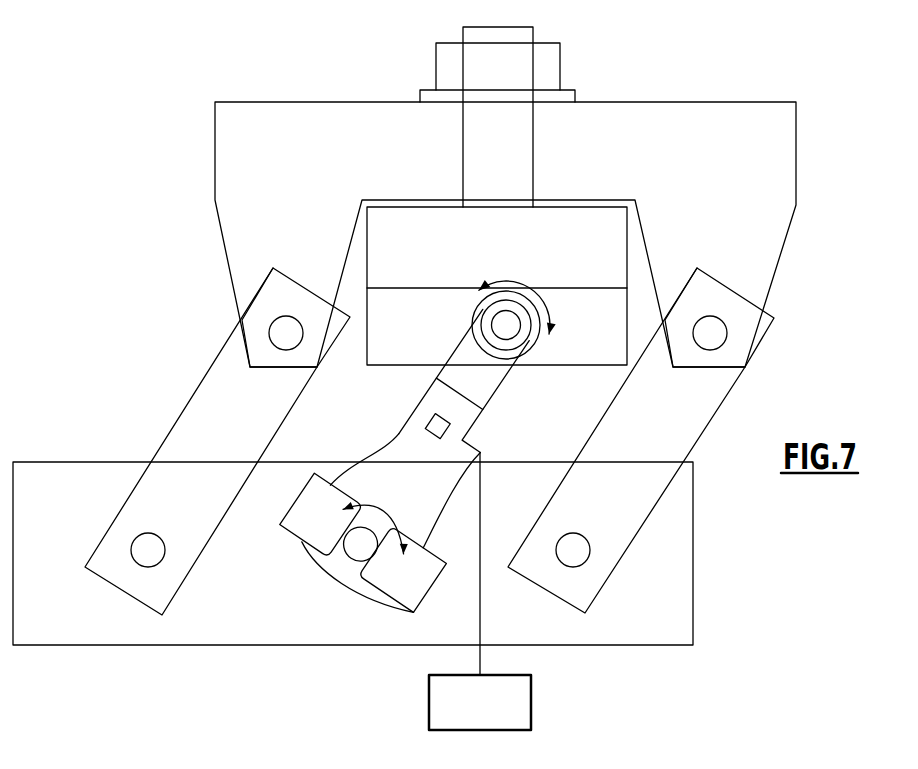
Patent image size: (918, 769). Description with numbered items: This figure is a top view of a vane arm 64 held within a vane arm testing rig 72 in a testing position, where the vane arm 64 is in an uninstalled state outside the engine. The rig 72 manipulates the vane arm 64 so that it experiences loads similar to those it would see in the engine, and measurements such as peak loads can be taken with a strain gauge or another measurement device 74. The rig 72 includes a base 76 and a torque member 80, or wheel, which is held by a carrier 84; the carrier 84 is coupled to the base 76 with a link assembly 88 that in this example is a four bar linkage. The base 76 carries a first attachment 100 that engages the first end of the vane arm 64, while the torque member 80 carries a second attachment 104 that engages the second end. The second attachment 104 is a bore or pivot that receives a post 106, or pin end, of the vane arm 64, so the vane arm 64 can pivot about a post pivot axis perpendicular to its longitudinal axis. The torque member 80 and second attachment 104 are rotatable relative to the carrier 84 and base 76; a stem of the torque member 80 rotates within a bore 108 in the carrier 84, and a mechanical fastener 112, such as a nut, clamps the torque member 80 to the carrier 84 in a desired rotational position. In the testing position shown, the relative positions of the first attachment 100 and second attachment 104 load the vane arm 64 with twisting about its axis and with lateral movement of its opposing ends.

The vane arm testing rig 72 is at (451, 378).
The carrier 84 is at (719, 129).
The bore 108 is at (533, 145).
The mechanical fastener 112 is at (552, 61).
The torque member 80 is at (583, 352).
The second attachment 104 is at (513, 336).
The post 106 is at (492, 325).
The vane arm 64 is at (470, 407).
The first attachment 100 is at (360, 552).
The link assembly 88 is at (165, 381).
The base 76 is at (660, 528).
The measurement device 74 is at (466, 711).